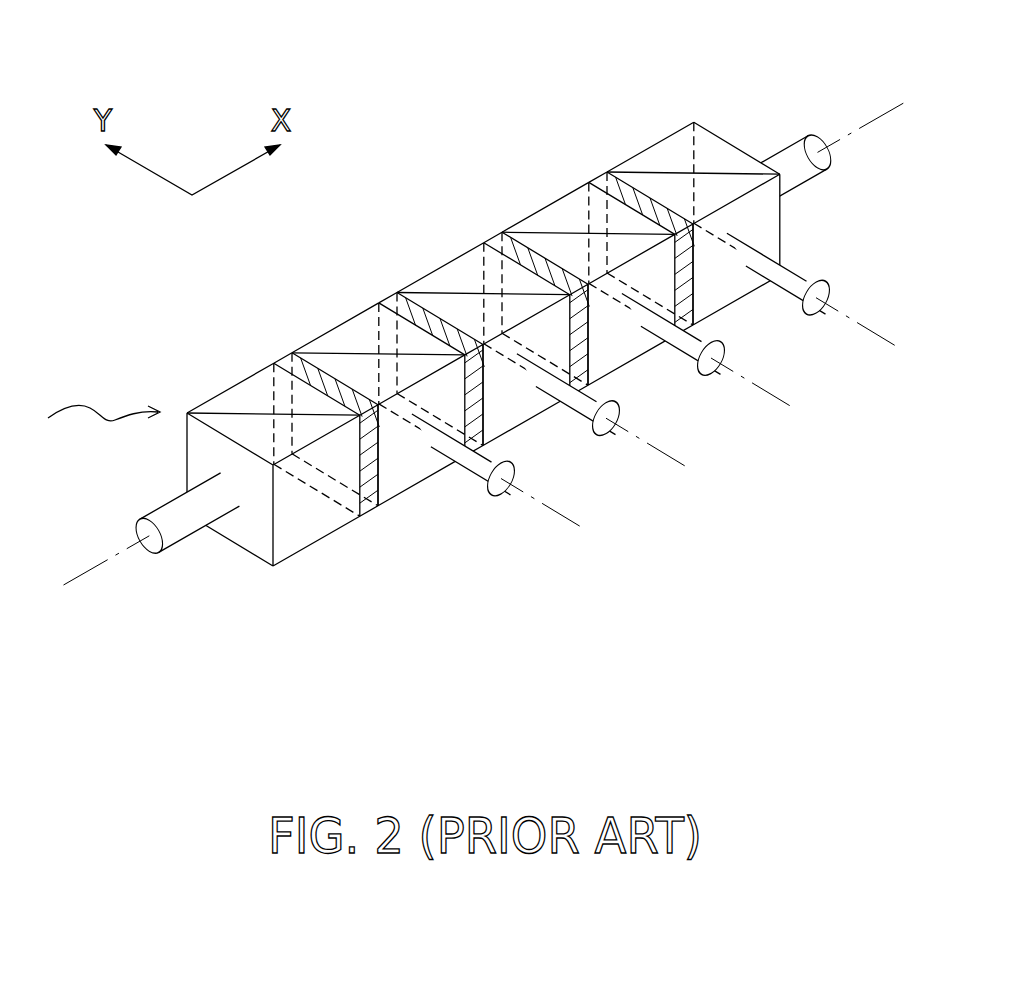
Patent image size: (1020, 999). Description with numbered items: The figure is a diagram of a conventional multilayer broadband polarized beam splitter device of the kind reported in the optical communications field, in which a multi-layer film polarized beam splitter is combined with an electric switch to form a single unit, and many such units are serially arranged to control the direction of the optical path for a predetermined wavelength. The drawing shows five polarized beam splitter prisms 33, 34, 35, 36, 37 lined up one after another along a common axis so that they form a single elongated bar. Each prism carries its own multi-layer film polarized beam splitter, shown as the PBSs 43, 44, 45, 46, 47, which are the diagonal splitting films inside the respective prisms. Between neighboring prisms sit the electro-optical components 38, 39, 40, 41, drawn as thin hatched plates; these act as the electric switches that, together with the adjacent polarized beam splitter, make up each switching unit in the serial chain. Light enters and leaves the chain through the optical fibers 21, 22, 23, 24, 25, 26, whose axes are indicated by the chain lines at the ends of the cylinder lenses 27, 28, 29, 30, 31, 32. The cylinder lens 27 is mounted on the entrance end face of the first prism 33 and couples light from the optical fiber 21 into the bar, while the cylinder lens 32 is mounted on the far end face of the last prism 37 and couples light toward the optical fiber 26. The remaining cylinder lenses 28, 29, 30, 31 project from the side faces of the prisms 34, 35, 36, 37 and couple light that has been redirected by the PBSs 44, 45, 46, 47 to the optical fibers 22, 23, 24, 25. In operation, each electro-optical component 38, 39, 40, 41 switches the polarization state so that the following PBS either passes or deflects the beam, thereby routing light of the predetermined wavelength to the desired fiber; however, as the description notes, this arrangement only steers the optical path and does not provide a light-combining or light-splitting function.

The optical fiber 21 is at (125, 552).
The optical fiber 22 is at (527, 493).
The optical fiber 23 is at (630, 433).
The optical fiber 24 is at (733, 373).
The optical fiber 25 is at (838, 314).
The optical fiber 26 is at (848, 135).
The cylinder lens 27 is at (185, 540).
The cylinder lens 28 is at (473, 487).
The cylinder lens 29 is at (575, 427).
The cylinder lens 30 is at (678, 365).
The cylinder lens 31 is at (780, 300).
The cylinder lens 32 is at (808, 183).
The polarized beam splitter prism 33 is at (322, 540).
The polarized beam splitter prism 34 is at (347, 317).
The polarized beam splitter prism 35 is at (455, 260).
The polarized beam splitter prism 36 is at (558, 197).
The polarized beam splitter prism 37 is at (683, 118).
The electro-optical component 38 is at (283, 352).
The electro-optical component 39 is at (389, 282).
The electro-optical component 40 is at (493, 215).
The electro-optical component 41 is at (597, 168).
The PBS 43 is at (213, 412).
The PBS 44 is at (317, 353).
The PBS 45 is at (422, 290).
The PBS 46 is at (533, 228).
The PBS 47 is at (657, 172).